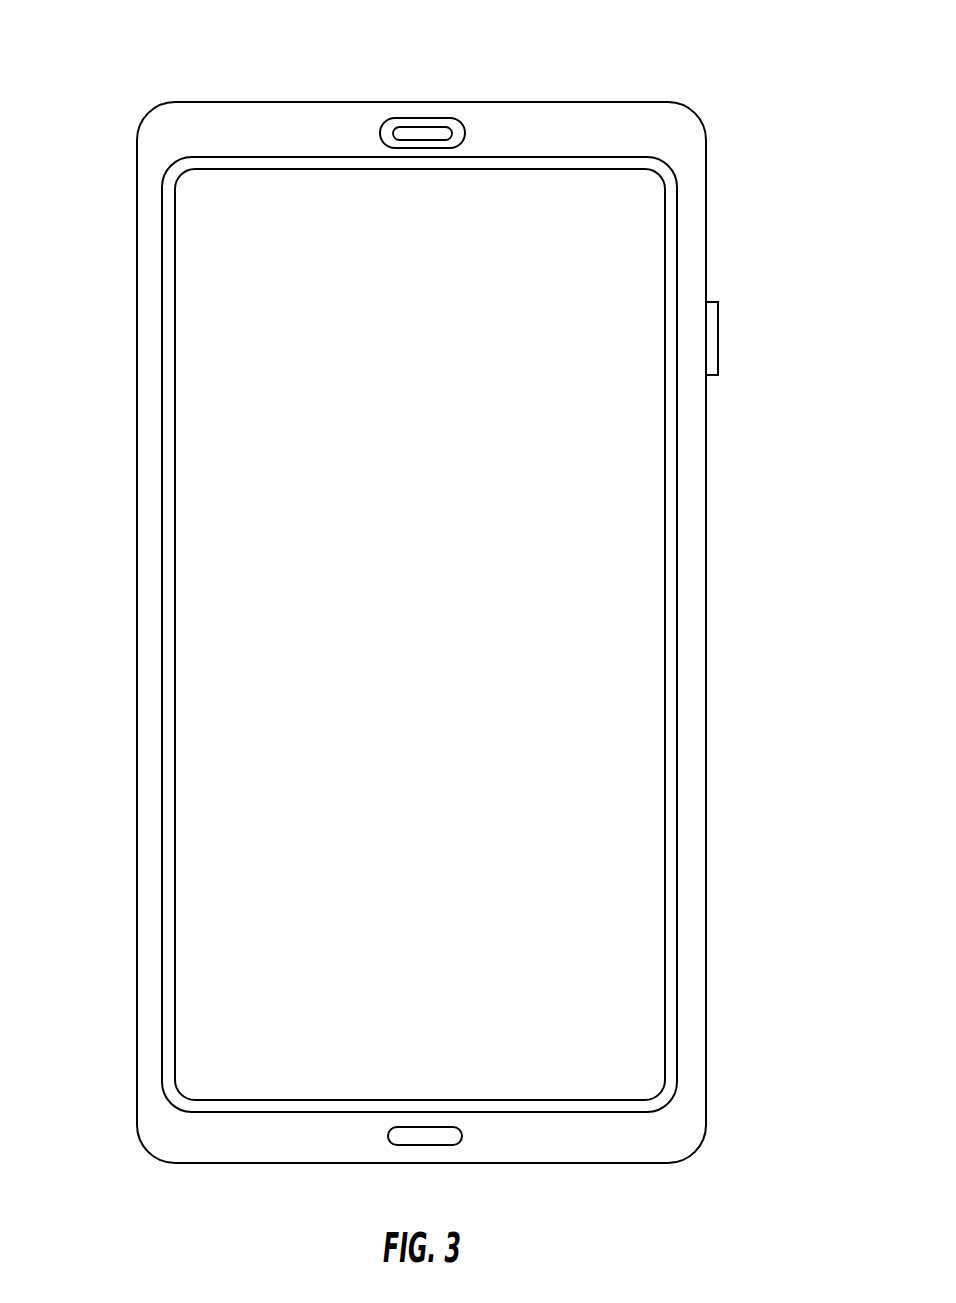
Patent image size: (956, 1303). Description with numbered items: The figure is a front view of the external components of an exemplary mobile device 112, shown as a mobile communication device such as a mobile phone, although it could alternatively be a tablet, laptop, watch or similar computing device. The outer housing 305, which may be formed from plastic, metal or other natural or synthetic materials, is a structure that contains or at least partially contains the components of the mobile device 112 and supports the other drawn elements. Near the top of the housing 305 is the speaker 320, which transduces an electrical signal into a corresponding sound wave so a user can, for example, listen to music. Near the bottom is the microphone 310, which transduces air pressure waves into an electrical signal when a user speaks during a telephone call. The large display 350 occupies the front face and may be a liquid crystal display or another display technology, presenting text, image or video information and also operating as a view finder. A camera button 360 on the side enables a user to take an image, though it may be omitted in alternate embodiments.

The mobile device 112 is at (211, 64).
The housing 305 is at (137, 538).
The microphone 310 is at (435, 1145).
The speaker 320 is at (428, 118).
The display 350 is at (648, 613).
The camera button 360 is at (710, 332).